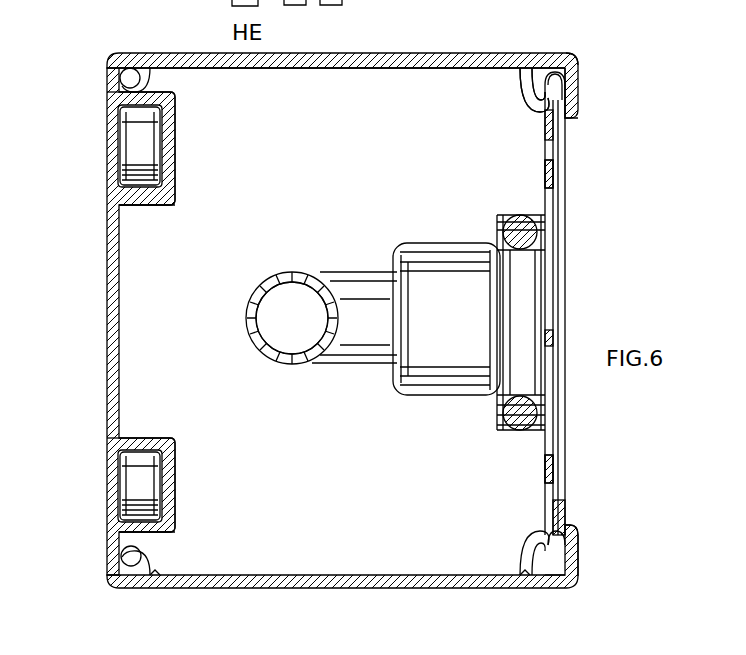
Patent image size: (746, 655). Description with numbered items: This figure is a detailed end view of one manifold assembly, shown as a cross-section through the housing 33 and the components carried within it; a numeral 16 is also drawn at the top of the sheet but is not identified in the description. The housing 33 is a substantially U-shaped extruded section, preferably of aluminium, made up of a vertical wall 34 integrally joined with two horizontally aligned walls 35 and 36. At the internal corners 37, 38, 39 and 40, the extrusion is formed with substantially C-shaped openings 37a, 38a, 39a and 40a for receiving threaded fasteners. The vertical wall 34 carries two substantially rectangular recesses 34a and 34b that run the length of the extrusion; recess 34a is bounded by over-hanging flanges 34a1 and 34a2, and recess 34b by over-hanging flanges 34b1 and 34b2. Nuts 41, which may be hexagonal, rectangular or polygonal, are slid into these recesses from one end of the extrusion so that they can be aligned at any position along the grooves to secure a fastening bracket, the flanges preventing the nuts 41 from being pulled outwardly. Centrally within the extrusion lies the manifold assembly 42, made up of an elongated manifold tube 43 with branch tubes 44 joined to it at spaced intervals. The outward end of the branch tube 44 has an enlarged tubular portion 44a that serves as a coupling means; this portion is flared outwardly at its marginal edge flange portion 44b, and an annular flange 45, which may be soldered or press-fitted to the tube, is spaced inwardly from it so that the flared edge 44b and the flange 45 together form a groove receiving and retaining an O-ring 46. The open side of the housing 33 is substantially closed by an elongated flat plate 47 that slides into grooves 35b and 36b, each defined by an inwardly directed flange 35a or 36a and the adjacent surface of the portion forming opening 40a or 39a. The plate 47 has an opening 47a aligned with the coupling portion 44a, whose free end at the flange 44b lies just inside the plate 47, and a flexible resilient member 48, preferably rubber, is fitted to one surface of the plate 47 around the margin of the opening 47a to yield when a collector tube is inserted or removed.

The housing 16 is at (140, 0).
The U-shaped housing 33 is at (431, 50).
The vertical wall 34 is at (112, 322).
The rectangular-shaped recess 34a is at (150, 152).
The over-hanging flange 34a1 is at (117, 112).
The over-hanging flange 34a2 is at (112, 182).
The rectangular-shaped recess 34b is at (150, 492).
The over-hanging flange 34b1 is at (117, 445).
The over-hanging flange 34b2 is at (113, 522).
The horizontally aligned wall 35 is at (353, 53).
The inwardly directed flange 35a is at (578, 108).
The groove 35b is at (566, 92).
The horizontally aligned wall 36 is at (322, 590).
The inwardly directed flange 36a is at (580, 568).
The groove 36b is at (580, 540).
The internal corner 37 is at (112, 62).
The C-shaped opening 37a is at (122, 86).
The internal corner 38 is at (124, 590).
The C-shaped opening 38a is at (122, 562).
The internal corner 39 is at (555, 585).
The C-shaped opening 39a is at (503, 590).
The internal corner 40 is at (572, 62).
The C-shaped opening 40a is at (531, 70).
The nut 41 is at (140, 150).
The manifold assembly 42 is at (314, 372).
The manifold tube 43 is at (250, 312).
The branch tube 44 is at (352, 288).
The enlarged tubular portion 44a is at (400, 380).
The marginal edge flange portion 44b is at (548, 252).
The annular flange 45 is at (500, 232).
The O-ring 46 is at (508, 430).
The flat plate 47 is at (557, 510).
The opening 47a is at (553, 178).
The flexible resilient member 48 is at (550, 470).